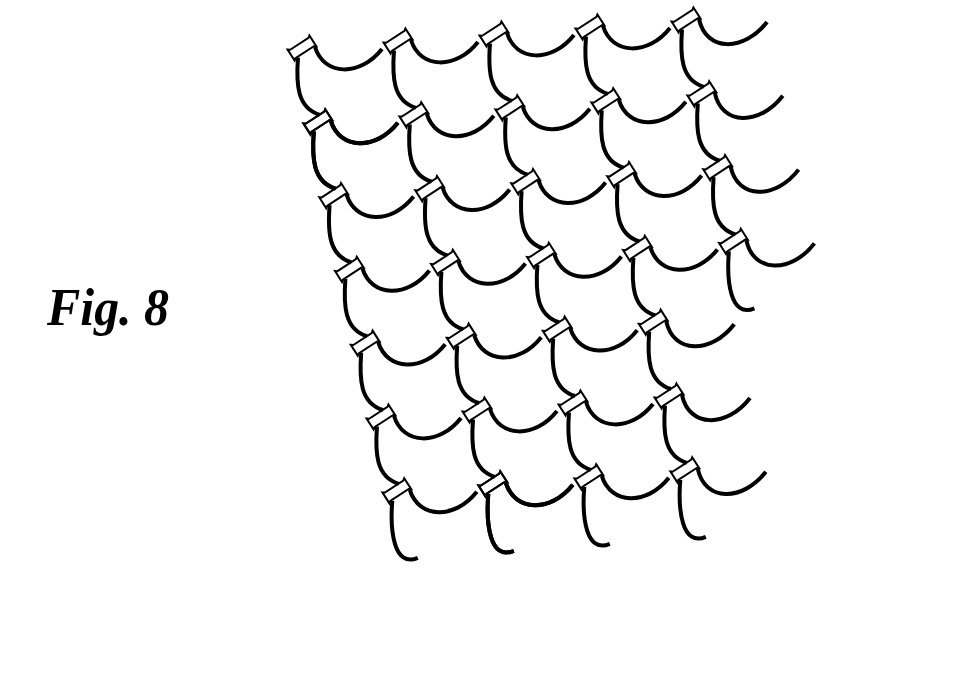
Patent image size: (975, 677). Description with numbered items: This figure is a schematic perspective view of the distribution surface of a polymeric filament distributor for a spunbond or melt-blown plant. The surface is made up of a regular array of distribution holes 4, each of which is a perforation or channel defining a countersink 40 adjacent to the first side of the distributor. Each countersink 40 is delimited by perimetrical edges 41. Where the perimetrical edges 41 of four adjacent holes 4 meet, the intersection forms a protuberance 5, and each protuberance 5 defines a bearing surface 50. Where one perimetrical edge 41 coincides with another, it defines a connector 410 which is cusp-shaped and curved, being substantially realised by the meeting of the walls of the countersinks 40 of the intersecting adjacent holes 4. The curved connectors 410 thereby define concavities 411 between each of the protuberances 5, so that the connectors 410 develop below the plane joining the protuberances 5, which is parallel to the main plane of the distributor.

The distribution hole 4 is at (282, 349).
The protuberance 5 is at (286, 70).
The countersink 40 is at (637, 473).
The perimetrical edge 41 is at (700, 148).
The bearing surface 50 is at (665, 320).
The connector 410 is at (537, 507).
The concavity 411 is at (530, 104).